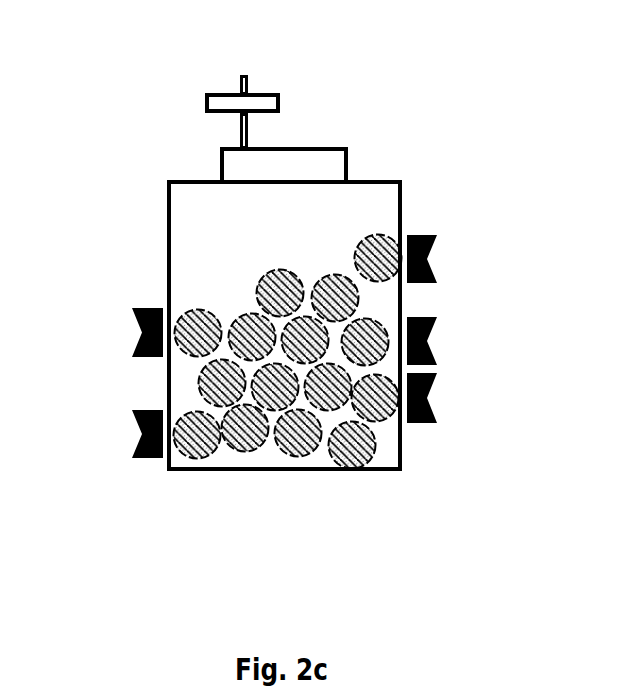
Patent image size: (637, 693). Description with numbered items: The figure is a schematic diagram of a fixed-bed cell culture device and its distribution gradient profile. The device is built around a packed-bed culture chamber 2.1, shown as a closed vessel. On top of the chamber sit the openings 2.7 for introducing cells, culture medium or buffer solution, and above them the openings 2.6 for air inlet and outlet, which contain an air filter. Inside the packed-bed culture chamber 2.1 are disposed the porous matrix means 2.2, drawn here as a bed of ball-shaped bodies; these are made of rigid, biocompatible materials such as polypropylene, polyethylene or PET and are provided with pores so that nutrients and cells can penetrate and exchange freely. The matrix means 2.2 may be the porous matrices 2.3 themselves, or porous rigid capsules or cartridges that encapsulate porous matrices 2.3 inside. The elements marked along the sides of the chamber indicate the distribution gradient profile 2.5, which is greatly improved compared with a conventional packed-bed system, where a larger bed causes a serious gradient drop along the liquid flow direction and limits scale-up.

The packed-bed culture chamber 2.1 is at (189, 473).
The porous matrix means 2.2 is at (239, 330).
The porous matrices 2.3 is at (219, 380).
The distribution gradient profile 2.5 is at (419, 425).
The openings for air inlet and outlet 2.6 is at (273, 79).
The openings for introducing cells, culture medium or buffer solution 2.7 is at (351, 153).